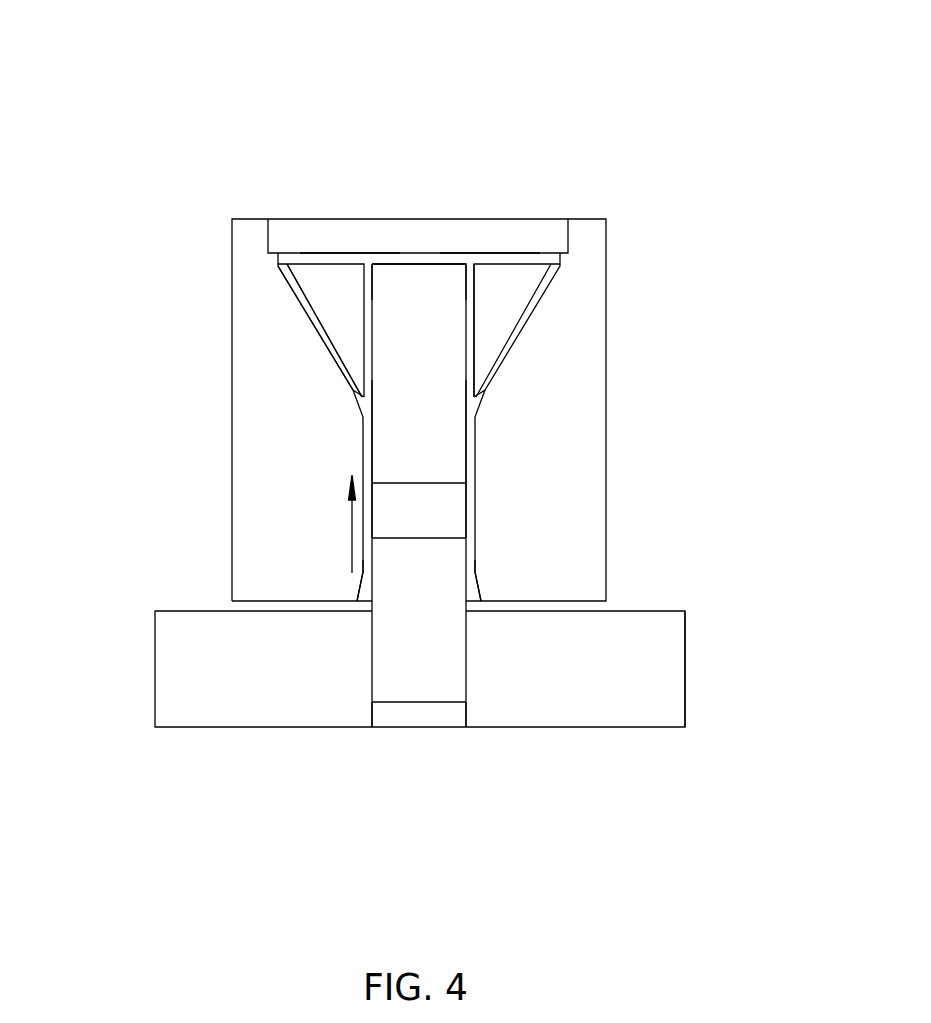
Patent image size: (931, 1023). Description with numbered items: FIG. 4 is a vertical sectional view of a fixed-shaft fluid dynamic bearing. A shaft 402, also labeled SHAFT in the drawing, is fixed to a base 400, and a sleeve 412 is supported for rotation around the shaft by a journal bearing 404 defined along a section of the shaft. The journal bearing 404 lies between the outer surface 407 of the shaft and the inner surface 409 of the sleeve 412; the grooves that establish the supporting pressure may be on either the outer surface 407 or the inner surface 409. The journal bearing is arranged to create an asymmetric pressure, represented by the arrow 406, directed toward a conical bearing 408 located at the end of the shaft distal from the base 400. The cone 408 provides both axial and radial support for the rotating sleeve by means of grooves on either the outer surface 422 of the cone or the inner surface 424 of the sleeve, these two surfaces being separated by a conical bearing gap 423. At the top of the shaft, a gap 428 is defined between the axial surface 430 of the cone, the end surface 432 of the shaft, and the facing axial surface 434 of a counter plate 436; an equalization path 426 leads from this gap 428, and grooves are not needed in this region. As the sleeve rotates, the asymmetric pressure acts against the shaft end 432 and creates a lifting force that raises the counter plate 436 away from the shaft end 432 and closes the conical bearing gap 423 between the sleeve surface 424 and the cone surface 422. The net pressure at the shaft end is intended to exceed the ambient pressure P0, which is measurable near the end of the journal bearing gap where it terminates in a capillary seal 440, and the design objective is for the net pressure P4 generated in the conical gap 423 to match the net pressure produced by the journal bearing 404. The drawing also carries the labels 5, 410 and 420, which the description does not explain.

The shaft base / bearing support 5 is at (650, 650).
The base 400 is at (685, 698).
The shaft 402 is at (401, 687).
The journal bearing 404 is at (452, 517).
The asymmetric pressure arrow 406 is at (348, 533).
The outer surface of the shaft 407 is at (466, 463).
The conical bearing 408 is at (333, 310).
The inner surface of the sleeve 409 is at (475, 455).
The shaft shoulder 410 is at (473, 483).
The sleeve 412 is at (580, 502).
The right wedge member 420 is at (500, 273).
The outer surface of the cone 422 is at (355, 390).
The conical bearing gap 423 is at (293, 285).
The inner surface of the sleeve 424 is at (327, 363).
The equalization path 426 is at (470, 293).
The gap 428 is at (377, 257).
The axial surface of the cone 430 is at (313, 264).
The end surface of the shaft 432 is at (423, 264).
The axial surface of counter plate 434 is at (530, 258).
The counter plate 436 is at (460, 230).
The capillary seal 440 is at (367, 590).
The ambient pressure P0 is at (480, 592).
The net pressure in conical gap P4 is at (560, 266).
The shaft SHAFT is at (432, 632).